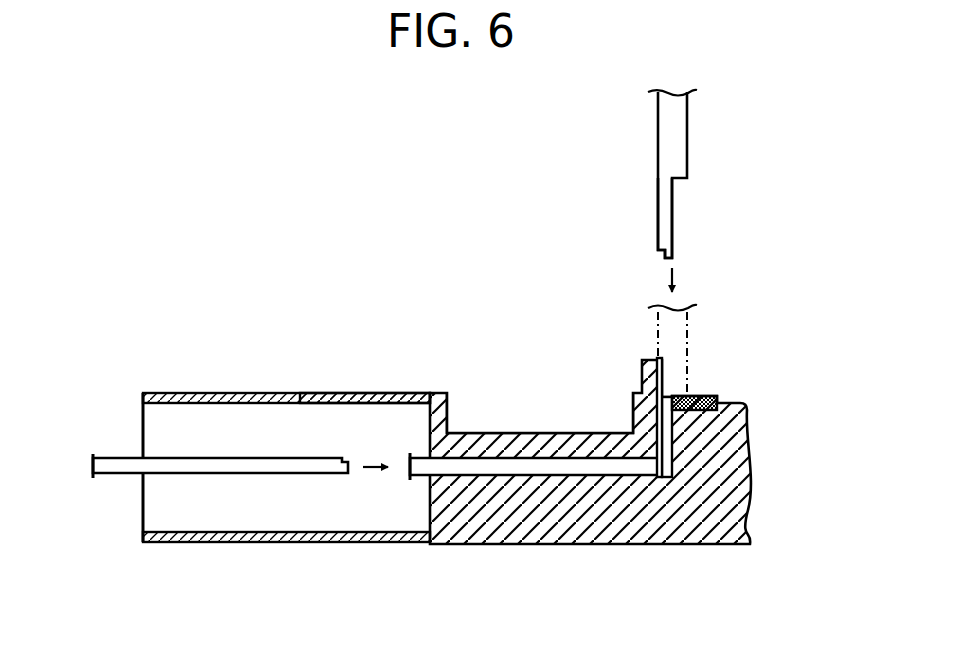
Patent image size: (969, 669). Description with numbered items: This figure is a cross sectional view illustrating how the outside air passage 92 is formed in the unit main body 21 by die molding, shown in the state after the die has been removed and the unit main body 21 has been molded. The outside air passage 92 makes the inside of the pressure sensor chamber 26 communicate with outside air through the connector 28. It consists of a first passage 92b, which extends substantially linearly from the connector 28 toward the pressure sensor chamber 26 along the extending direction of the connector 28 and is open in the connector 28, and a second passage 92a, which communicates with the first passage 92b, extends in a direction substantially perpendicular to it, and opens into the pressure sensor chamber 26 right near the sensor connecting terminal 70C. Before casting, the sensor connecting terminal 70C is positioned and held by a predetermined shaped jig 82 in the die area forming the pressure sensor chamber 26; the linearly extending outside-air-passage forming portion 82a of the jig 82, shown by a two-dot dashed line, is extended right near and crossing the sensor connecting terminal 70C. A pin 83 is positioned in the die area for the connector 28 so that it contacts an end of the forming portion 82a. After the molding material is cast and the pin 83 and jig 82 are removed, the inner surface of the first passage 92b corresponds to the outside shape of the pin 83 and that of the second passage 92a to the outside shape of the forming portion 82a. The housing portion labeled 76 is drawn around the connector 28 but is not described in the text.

The unit main body 21 is at (621, 492).
The pressure sensor chamber 26 is at (635, 547).
The connector 28 is at (332, 392).
The housing 76 is at (217, 392).
The jig 82 is at (680, 147).
The outside-air-passage forming portion 82a is at (670, 213).
The pin 83 is at (248, 467).
The outside air passage 92 is at (536, 376).
The second passage 92a is at (660, 425).
The first passage 92b is at (532, 468).
The sensor connecting terminal 70C is at (703, 395).